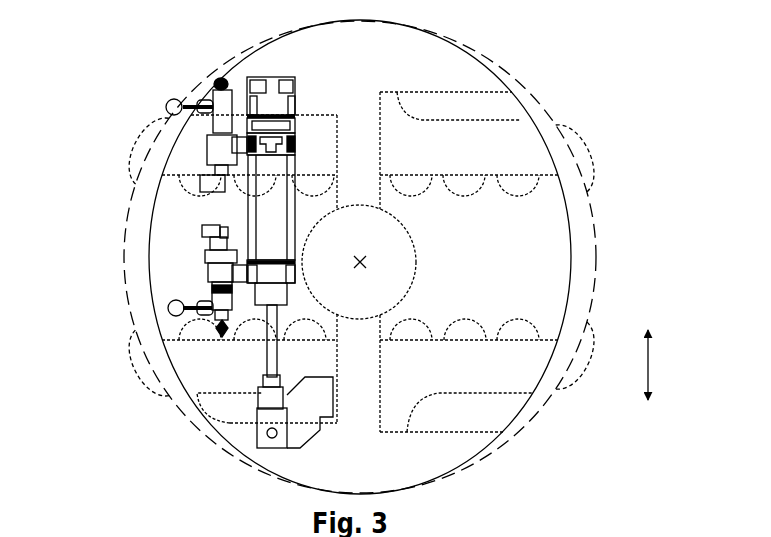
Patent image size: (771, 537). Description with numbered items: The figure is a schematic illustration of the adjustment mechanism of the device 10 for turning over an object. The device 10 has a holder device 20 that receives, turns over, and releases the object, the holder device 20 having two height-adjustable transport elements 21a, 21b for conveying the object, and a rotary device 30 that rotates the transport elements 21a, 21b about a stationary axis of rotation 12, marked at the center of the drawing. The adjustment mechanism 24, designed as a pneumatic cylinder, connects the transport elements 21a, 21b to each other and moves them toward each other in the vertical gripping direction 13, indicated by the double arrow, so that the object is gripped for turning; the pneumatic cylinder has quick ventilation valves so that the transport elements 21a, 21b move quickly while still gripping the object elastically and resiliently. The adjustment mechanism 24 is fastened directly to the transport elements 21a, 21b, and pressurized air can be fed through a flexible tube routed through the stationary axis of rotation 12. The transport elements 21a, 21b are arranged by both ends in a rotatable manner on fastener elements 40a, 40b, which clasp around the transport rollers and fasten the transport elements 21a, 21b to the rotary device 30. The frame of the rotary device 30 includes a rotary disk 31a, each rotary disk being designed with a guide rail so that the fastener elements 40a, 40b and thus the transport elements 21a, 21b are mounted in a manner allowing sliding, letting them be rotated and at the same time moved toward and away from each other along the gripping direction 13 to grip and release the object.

The device 10 is at (150, 68).
The holder device 20 is at (582, 136).
The transport element 21a is at (127, 174).
The transport element 21b is at (124, 355).
The adjustment mechanism 24 is at (198, 206).
The axis of rotation 12 is at (368, 258).
The rotary device 30 is at (448, 257).
The rotary disk 31a is at (570, 312).
The gripping direction 13 is at (667, 365).
The fastener element 40a is at (470, 157).
The fastener element 40b is at (504, 379).